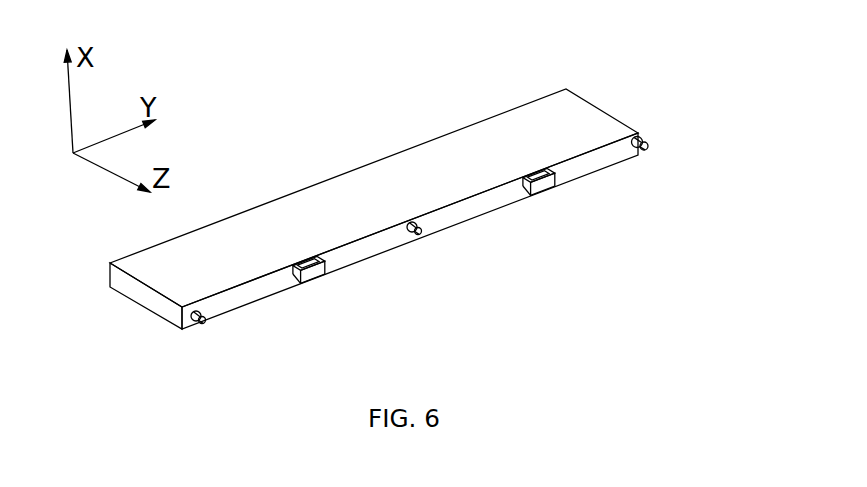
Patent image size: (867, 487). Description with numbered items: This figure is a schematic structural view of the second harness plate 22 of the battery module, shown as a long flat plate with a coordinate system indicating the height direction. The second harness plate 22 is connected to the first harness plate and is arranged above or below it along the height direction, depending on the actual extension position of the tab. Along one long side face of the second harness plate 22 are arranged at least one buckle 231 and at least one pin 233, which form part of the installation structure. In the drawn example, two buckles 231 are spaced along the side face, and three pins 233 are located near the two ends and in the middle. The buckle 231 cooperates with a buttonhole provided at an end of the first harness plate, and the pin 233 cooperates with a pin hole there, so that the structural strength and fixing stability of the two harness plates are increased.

The second harness plate 22 is at (357, 31).
The buckle 231 is at (313, 281).
The pin 233 is at (201, 321).